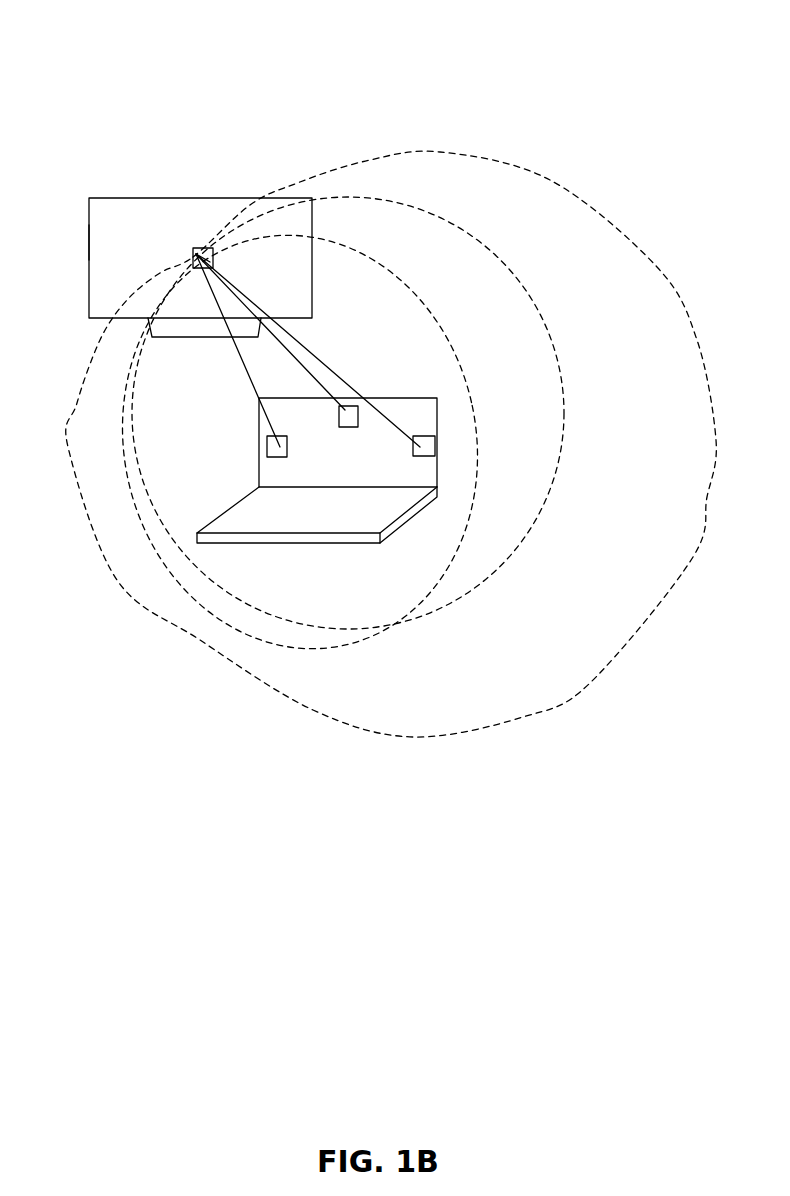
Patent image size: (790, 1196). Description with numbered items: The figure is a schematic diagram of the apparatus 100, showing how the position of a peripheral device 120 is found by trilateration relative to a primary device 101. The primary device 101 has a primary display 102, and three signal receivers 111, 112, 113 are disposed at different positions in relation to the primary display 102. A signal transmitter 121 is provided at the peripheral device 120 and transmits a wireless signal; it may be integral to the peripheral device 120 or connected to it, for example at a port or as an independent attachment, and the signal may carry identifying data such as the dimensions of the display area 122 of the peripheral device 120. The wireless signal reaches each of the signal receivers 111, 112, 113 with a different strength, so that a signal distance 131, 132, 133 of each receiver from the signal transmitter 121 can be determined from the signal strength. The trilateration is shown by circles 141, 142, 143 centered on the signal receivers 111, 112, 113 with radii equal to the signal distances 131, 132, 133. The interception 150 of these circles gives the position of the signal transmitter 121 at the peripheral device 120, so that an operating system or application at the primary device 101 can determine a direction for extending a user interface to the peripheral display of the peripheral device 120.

The apparatus 100 is at (165, 72).
The primary device 101 is at (397, 523).
The primary display 102 is at (437, 410).
The signal receiver 111 is at (267, 450).
The signal receiver 112 is at (348, 427).
The signal receiver 113 is at (435, 449).
The peripheral device 120 is at (123, 197).
The signal transmitter 121 is at (193, 250).
The display area 122 is at (89, 237).
The signal distance 131 is at (243, 372).
The signal distance 132 is at (318, 370).
The signal distance 133 is at (348, 383).
The circle 141 is at (340, 250).
The circle 142 is at (392, 203).
The circle 143 is at (453, 152).
The interception 150 is at (195, 248).